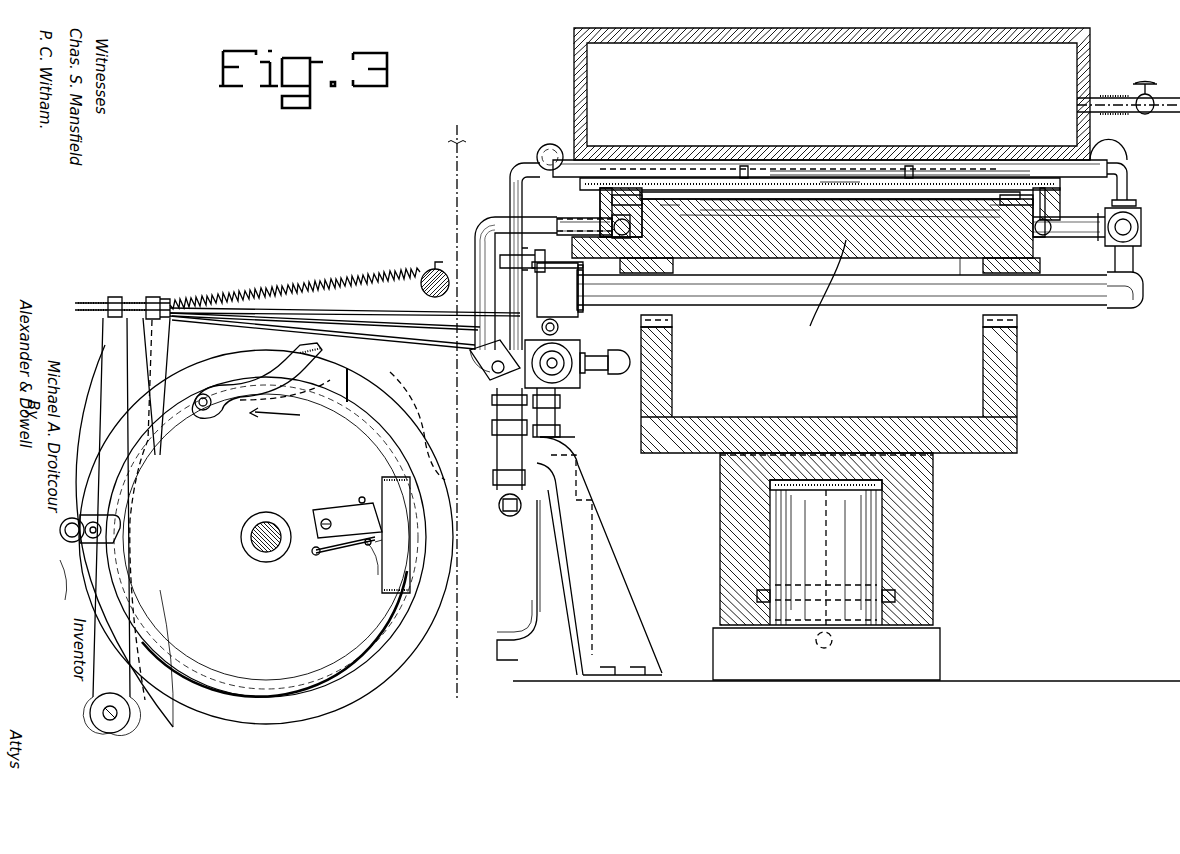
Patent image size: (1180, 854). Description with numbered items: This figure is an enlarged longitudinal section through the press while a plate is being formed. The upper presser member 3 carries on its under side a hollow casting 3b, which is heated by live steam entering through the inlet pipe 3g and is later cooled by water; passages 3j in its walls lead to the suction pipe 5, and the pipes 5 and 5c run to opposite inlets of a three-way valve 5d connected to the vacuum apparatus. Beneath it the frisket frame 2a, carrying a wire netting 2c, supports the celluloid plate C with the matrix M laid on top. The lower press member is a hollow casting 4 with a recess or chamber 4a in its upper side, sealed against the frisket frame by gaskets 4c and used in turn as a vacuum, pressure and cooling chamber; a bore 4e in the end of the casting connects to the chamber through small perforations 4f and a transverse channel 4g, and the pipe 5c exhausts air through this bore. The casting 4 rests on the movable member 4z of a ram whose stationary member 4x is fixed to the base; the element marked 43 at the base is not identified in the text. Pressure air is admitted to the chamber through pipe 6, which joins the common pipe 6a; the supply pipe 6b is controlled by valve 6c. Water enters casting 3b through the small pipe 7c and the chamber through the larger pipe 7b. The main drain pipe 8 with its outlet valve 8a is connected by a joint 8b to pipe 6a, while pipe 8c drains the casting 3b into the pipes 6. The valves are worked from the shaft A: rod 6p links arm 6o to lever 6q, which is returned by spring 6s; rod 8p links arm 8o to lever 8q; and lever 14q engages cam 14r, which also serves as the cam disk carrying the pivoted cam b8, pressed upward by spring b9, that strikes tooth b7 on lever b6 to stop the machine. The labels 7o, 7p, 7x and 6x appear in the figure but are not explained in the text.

The upper presser member 3 is at (832, 94).
The inlet pipe 3g is at (1095, 98).
The hollow casting 3b is at (548, 145).
The frisket frame 2a is at (614, 200).
The transverse channel 4g is at (650, 200).
The bore 4e is at (668, 200).
The main drain pipe 8 is at (710, 200).
The passages 3j is at (748, 172).
The suction pipe 5 is at (790, 185).
The plate C is at (808, 185).
The three-way valve 5d is at (840, 185).
The recess or chamber 4a is at (870, 250).
The wire netting 2c is at (850, 195).
The matrix M is at (800, 169).
The pipe 8c is at (1130, 176).
The pipe 6 is at (1146, 230).
The gaskets 4c is at (584, 210).
The small perforations 4f is at (560, 212).
The pipe 7c is at (510, 183).
The pipe 7b is at (478, 245).
The pipe coupling 7o is at (555, 281).
The joint 8b is at (557, 289).
The arm 8o is at (562, 340).
The arm 6o is at (570, 352).
The valve 6c is at (510, 372).
The outlet valve 8a is at (592, 380).
The pipe 6b is at (500, 498).
The hollow casting 4 is at (754, 412).
The common pipe 6a is at (910, 292).
The pipe 5c is at (962, 250).
The movable member 4z is at (822, 430).
The stationary member 4x is at (932, 520).
The pivot pin 43 is at (836, 642).
The spring 6s is at (290, 290).
The rod 7p is at (342, 316).
The rod 8p is at (392, 320).
The rod 6p is at (410, 336).
The link 7x is at (420, 432).
The lever 6q is at (164, 348).
The lever 8q is at (110, 372).
The lever 14q is at (236, 392).
The shaft A is at (256, 542).
The pivoted cam b8 is at (345, 515).
The spring b9 is at (350, 548).
The tooth b7 is at (355, 560).
The lever b6 is at (392, 572).
The brake arm 6x is at (165, 700).
The cam 14r is at (203, 645).